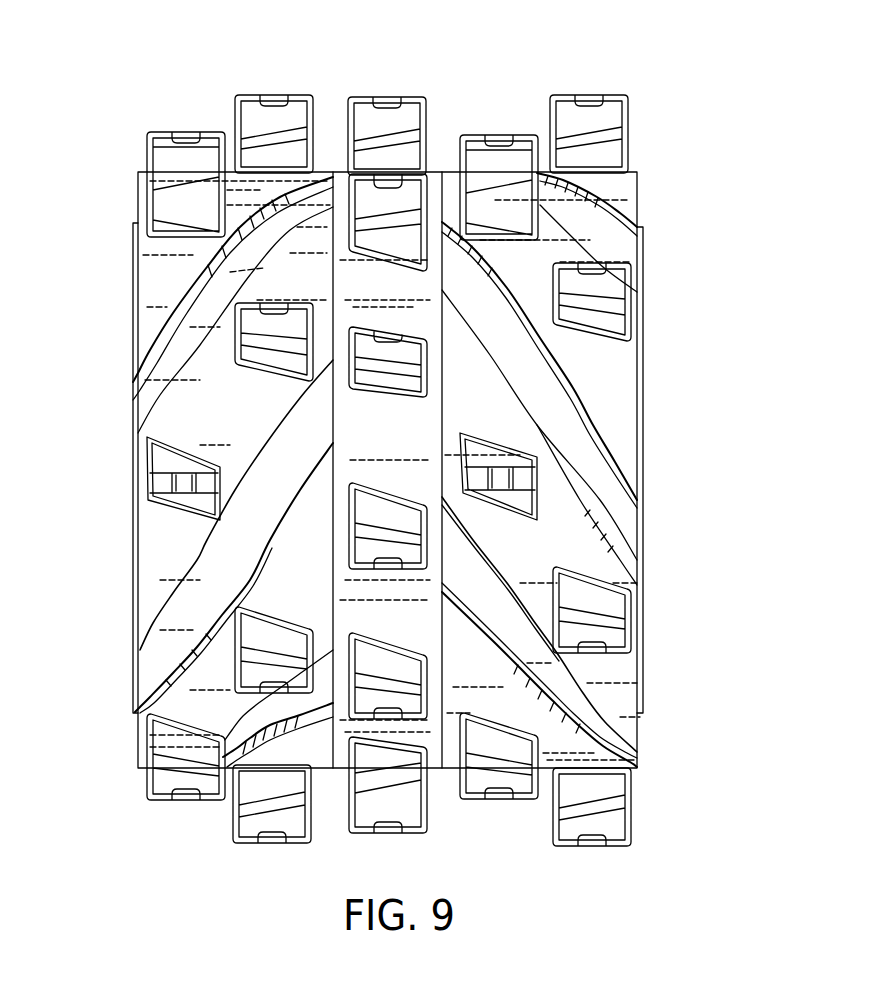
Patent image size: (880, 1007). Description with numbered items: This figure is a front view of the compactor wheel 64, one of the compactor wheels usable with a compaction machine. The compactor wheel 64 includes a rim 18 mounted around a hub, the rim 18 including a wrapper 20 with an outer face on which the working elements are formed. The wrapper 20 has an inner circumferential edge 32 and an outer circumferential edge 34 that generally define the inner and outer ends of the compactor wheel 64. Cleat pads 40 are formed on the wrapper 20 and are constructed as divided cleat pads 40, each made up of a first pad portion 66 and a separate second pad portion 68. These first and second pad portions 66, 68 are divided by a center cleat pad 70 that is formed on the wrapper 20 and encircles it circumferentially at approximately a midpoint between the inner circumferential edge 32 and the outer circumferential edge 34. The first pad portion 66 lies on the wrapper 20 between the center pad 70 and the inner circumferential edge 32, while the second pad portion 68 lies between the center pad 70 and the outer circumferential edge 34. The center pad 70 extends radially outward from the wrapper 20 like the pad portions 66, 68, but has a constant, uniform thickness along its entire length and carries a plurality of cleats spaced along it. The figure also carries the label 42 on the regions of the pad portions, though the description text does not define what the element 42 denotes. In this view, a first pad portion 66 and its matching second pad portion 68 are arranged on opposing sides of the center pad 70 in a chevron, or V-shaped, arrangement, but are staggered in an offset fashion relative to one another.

The rim 18 is at (138, 780).
The wrapper 20 is at (544, 773).
The inner circumferential edge 32 is at (654, 462).
The outer circumferential edge 34 is at (130, 547).
The cleat pad 40 is at (253, 197).
The drum surface between ribs 42 is at (224, 552).
The compactor wheel 64 is at (152, 68).
The first pad portion 66 is at (606, 378).
The second pad portion 68 is at (206, 405).
The center cleat pad 70 is at (367, 452).